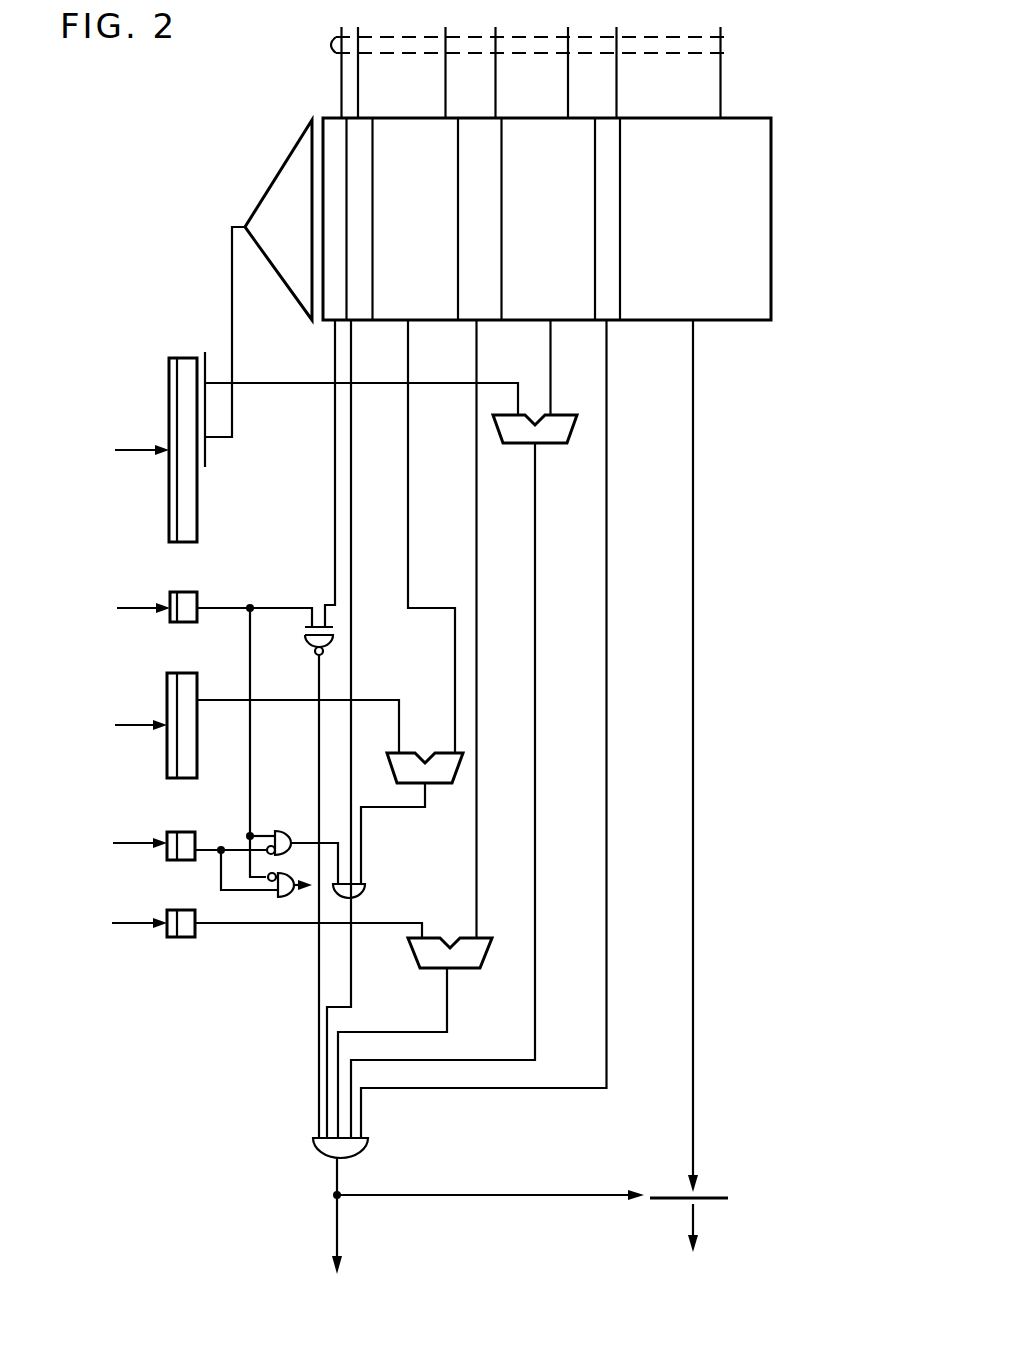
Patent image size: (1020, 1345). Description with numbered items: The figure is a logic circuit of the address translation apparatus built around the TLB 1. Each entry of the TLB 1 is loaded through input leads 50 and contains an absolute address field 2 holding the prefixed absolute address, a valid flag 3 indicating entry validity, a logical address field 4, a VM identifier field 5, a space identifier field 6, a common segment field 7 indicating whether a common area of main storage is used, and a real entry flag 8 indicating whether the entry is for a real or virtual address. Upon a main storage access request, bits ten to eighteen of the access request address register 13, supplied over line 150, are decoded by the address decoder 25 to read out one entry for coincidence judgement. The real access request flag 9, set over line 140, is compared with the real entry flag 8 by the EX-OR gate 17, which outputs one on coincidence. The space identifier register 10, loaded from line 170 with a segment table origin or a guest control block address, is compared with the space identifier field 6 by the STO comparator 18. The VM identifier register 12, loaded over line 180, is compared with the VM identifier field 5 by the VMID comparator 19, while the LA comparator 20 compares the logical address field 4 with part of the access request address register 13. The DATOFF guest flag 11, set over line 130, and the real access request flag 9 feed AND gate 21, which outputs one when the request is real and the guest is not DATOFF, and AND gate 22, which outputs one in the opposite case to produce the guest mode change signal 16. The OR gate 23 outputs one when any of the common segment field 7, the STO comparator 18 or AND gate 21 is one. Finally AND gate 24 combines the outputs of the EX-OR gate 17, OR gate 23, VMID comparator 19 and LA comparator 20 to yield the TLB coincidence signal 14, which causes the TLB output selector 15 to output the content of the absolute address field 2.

The TLB 1 is at (771, 205).
The absolute address field 2 is at (690, 118).
The valid flag 3 is at (610, 118).
The logical address field 4 is at (570, 118).
The VM identifier field 5 is at (480, 118).
The space identifier field 6 is at (425, 118).
The common segment field 7 is at (365, 118).
The real entry flag 8 is at (333, 118).
The real access request flag 9 is at (178, 592).
The space identifier register 10 is at (175, 673).
The DATOFF guest flag 11 is at (178, 832).
The VM identifier register 12 is at (178, 910).
The access request address register 13 is at (178, 357).
The TLB coincidence signal 14 is at (335, 1232).
The TLB output selector 15 is at (720, 1196).
The guest mode change signal 16 is at (296, 900).
The EX-OR gate 17 is at (308, 648).
The STO comparator 18 is at (435, 783).
The VMID comparator 19 is at (465, 968).
The LA comparator 20 is at (553, 443).
The AND gate 21 is at (282, 831).
The AND gate 22 is at (276, 893).
The OR gate 23 is at (365, 893).
The AND gate 24 is at (313, 1150).
The address decoder 25 is at (272, 190).
The input leads 50 is at (731, 37).
The line 130 is at (135, 843).
The line 140 is at (132, 608).
The address input signal 150 is at (134, 449).
The line 170 is at (130, 725).
The logical address input signal 180 is at (135, 925).